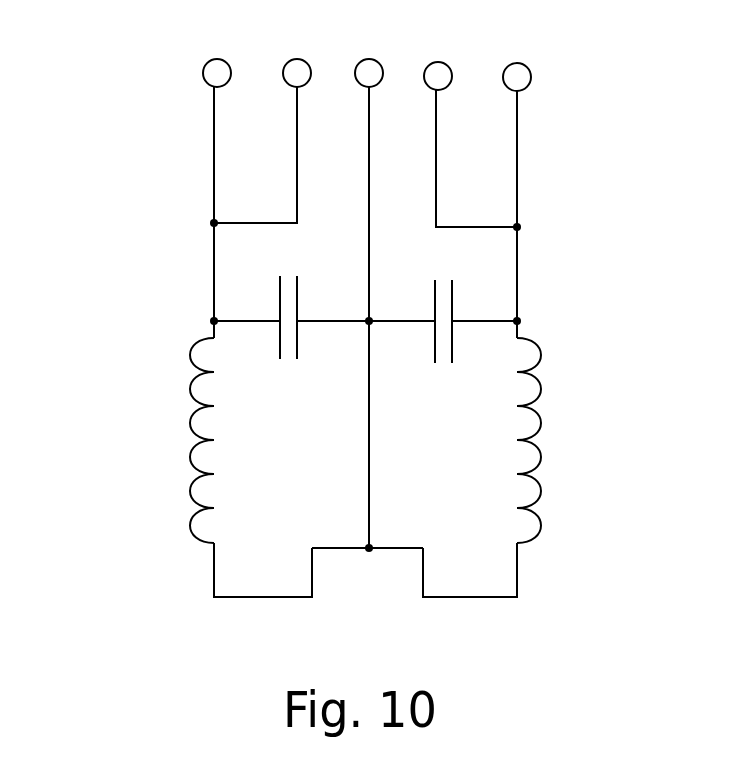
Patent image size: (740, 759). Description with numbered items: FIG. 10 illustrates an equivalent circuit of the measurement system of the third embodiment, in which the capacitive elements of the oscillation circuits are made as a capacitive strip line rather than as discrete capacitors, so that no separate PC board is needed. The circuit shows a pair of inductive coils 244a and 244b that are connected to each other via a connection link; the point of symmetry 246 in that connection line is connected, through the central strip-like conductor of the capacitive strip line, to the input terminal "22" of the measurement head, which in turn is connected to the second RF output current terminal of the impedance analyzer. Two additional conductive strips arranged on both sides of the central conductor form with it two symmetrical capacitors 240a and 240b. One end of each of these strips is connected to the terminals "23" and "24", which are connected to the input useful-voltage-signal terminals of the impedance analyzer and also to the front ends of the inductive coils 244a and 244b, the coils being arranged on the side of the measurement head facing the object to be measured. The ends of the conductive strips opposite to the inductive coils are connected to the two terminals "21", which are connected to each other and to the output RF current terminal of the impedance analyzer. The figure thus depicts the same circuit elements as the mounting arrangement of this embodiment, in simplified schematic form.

The terminals 21 is at (365, 49).
The terminal 23 is at (268, 115).
The input terminal 22 is at (371, 278).
The terminal 24 is at (466, 117).
The capacitor 240a is at (277, 296).
The capacitor 240b is at (452, 301).
The inductive coil 244a is at (200, 437).
The inductive coil 244b is at (537, 434).
The point of symmetry 246 is at (369, 552).